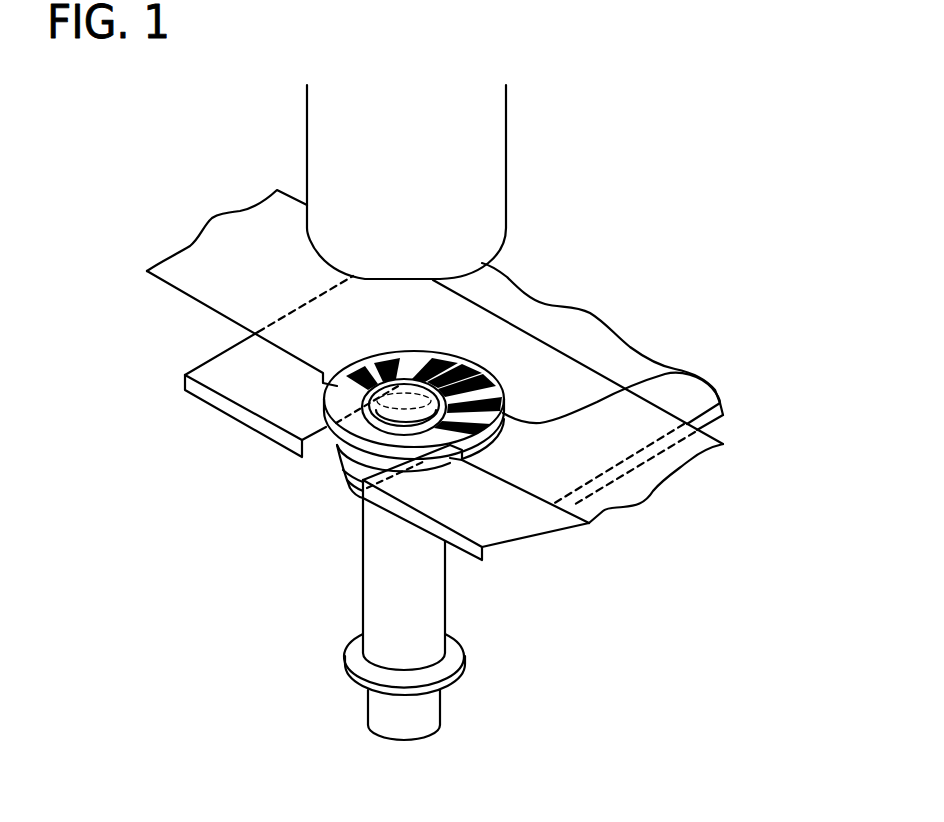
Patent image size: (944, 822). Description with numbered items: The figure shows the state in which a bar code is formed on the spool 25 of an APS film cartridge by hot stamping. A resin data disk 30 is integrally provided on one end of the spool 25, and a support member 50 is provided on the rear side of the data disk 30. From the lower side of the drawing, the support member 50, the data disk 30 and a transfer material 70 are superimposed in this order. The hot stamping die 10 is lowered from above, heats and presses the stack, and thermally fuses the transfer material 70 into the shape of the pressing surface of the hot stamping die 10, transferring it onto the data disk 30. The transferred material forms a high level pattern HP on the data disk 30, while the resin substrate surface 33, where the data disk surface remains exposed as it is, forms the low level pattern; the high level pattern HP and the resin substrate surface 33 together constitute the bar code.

The hot stamping die 10 is at (487, 153).
The transfer material 70 is at (222, 233).
The resin substrate surface 33 is at (667, 367).
The support member 50 is at (250, 392).
The resin data disk 30 is at (470, 448).
The high level pattern HP is at (462, 368).
The spool 25 is at (420, 598).